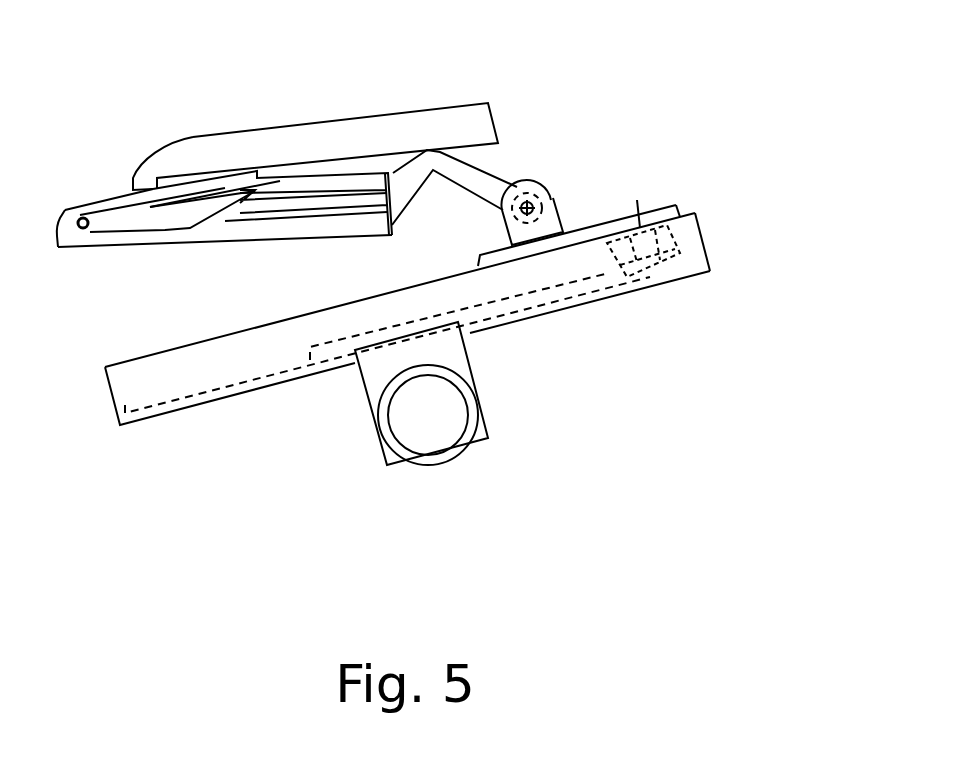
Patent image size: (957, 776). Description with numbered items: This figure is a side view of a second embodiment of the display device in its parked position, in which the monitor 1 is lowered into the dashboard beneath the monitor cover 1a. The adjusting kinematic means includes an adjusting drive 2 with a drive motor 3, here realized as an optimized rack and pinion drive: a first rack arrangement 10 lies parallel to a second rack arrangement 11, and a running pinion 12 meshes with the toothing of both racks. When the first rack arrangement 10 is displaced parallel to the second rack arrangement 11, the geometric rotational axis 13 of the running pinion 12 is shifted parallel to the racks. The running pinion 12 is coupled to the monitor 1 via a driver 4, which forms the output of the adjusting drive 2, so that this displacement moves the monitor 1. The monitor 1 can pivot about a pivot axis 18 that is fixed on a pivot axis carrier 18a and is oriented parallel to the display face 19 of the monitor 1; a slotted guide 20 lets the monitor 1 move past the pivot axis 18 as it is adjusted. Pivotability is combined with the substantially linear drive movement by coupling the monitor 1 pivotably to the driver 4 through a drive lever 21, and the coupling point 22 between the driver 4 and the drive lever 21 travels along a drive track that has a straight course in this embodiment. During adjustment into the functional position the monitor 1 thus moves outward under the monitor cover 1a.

The monitor 1 is at (357, 178).
The monitor cover 1a is at (283, 137).
The adjusting drive 2 is at (565, 323).
The drive motor 3 is at (432, 428).
The driver 4 is at (565, 228).
The first rack arrangement 10 is at (497, 305).
The second rack arrangement 11 is at (705, 218).
The running pinion 12 is at (698, 231).
The geometric rotational axis 13 is at (667, 290).
The pivot axis 18 is at (78, 207).
The pivot axis carrier 18a is at (207, 205).
The display face 19 is at (250, 240).
The slotted guide 20 is at (293, 210).
The drive lever 21 is at (482, 183).
The coupling point 22 is at (553, 190).